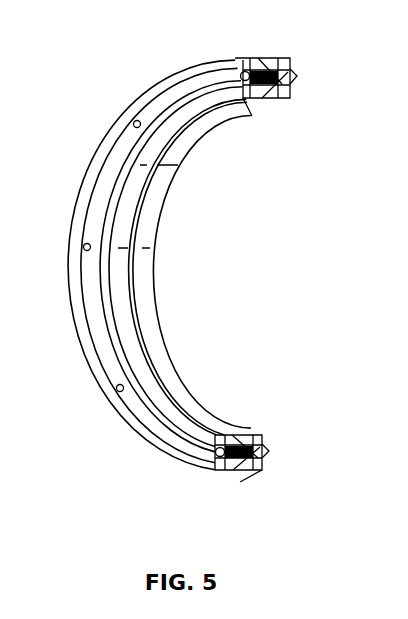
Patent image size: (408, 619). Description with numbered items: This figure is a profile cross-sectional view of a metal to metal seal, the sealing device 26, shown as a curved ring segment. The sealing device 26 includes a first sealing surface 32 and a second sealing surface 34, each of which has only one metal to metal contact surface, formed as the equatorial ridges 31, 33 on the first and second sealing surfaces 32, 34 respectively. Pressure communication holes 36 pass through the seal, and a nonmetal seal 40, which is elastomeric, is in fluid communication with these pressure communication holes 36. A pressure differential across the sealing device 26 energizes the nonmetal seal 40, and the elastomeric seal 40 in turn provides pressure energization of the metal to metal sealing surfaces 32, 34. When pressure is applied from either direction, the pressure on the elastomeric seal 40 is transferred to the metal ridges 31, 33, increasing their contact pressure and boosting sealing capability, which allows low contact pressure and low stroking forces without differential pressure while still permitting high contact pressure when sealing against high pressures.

The sealing device 26 is at (133, 50).
The equatorial ridge 31 is at (242, 472).
The first sealing surface 32 is at (258, 465).
The equatorial ridge 33 is at (145, 351).
The second sealing surface 34 is at (153, 282).
The pressure communication holes 36 is at (133, 121).
The nonmetal seal 40 is at (260, 438).